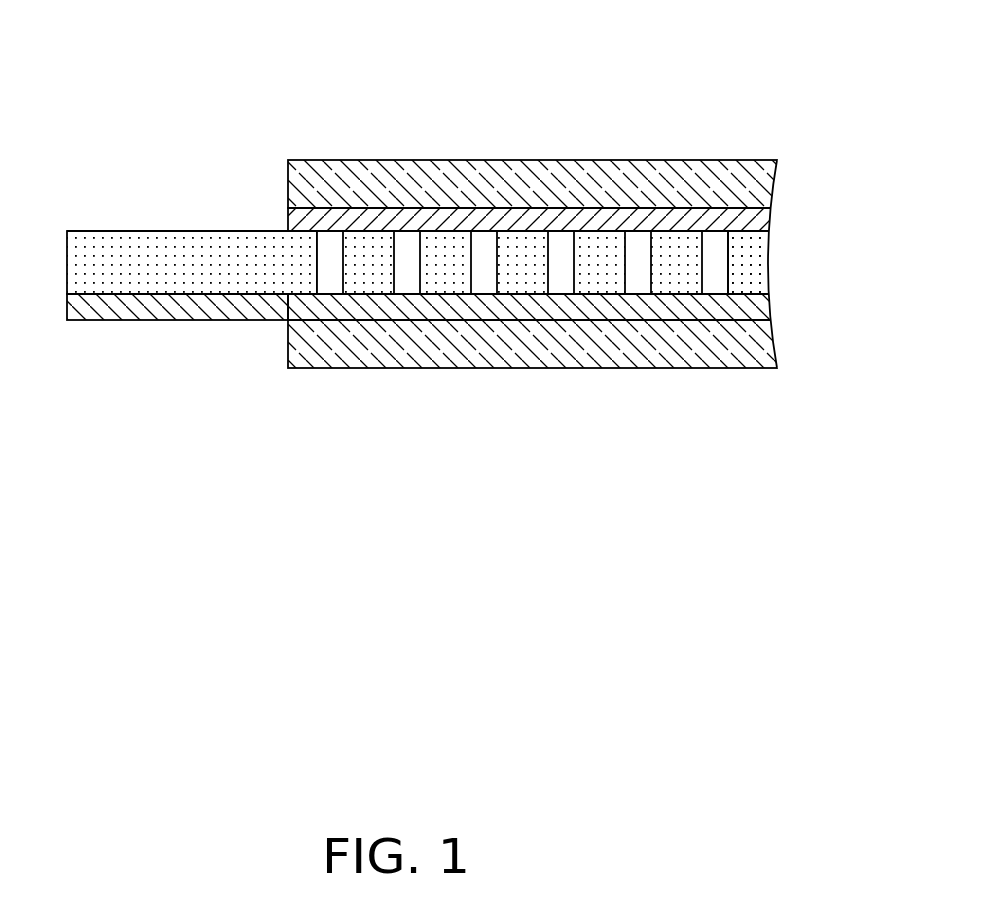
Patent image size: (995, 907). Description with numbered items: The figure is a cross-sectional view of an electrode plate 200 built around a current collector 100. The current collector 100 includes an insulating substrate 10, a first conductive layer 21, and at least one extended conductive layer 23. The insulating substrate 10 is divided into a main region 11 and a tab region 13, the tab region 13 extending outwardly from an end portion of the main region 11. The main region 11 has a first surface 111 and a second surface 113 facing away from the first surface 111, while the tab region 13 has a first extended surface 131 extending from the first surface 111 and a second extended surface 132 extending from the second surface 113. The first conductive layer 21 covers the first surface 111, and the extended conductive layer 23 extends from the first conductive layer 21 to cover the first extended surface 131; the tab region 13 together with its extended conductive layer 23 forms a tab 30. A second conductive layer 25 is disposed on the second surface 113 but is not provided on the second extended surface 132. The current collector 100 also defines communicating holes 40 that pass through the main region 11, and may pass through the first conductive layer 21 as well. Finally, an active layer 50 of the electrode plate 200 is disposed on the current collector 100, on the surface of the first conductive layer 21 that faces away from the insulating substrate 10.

The electrode plate 200 is at (505, 38).
The current collector 100 is at (408, 316).
The insulating substrate 10 is at (408, 287).
The main region 11 is at (547, 267).
The tab region 13 is at (188, 308).
The first surface 111 is at (592, 295).
The second surface 113 is at (593, 232).
The first extended surface 131 is at (97, 297).
The second extended surface 132 is at (165, 233).
The first conductive layer 21 is at (445, 310).
The extended conductive layer 23 is at (185, 308).
The second conductive layer 25 is at (518, 222).
The tab 30 is at (533, 236).
The communicating hole 40 is at (718, 265).
The active layer 50 is at (707, 175).